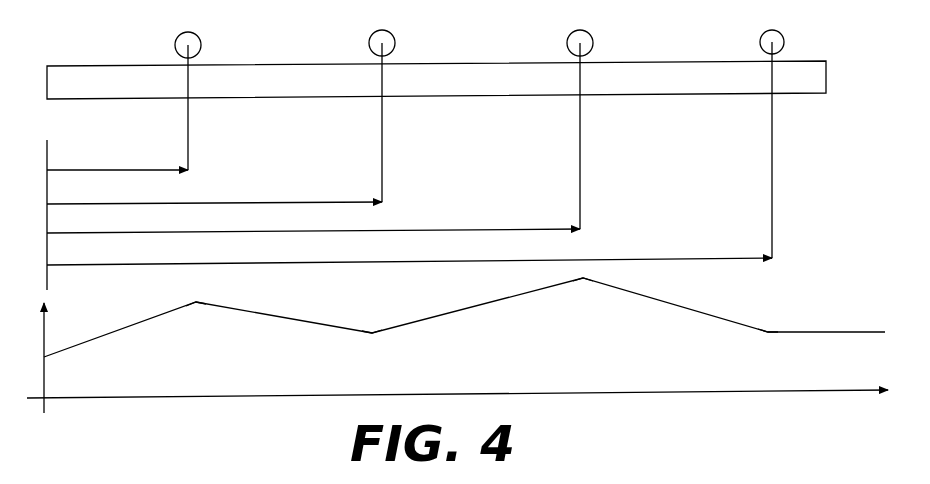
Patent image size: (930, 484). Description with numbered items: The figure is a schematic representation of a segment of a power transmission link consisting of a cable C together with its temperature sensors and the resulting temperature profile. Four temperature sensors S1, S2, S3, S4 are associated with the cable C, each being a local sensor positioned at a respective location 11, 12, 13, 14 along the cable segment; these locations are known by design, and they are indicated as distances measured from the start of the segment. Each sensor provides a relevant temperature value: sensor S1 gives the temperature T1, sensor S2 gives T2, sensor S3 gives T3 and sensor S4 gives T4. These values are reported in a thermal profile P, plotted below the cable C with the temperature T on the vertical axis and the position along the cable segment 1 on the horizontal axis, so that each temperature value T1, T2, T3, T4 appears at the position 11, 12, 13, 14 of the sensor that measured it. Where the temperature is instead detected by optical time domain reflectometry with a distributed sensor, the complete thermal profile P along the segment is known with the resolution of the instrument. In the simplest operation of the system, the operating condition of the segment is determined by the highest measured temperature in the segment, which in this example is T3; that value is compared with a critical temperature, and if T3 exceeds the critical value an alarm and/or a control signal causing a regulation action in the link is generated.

The cable C is at (803, 61).
The temperature sensor S1 is at (198, 36).
The temperature sensor S2 is at (392, 34).
The temperature sensor S3 is at (590, 34).
The temperature sensor S4 is at (781, 33).
The sensor location 11 is at (97, 170).
The sensor location 12 is at (90, 204).
The sensor location 13 is at (88, 233).
The sensor location 14 is at (80, 265).
The temperature T is at (44, 335).
The temperature value T1 is at (197, 303).
The temperature value T2 is at (372, 333).
The temperature value T3 is at (584, 279).
The temperature value T4 is at (770, 332).
The thermal profile P is at (835, 332).
The position along the cable segment 1 is at (778, 392).